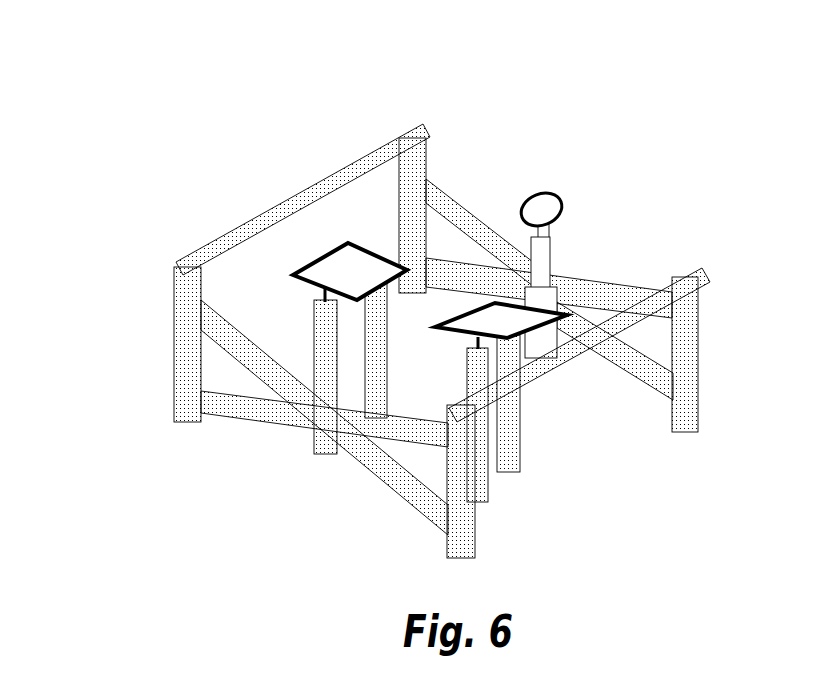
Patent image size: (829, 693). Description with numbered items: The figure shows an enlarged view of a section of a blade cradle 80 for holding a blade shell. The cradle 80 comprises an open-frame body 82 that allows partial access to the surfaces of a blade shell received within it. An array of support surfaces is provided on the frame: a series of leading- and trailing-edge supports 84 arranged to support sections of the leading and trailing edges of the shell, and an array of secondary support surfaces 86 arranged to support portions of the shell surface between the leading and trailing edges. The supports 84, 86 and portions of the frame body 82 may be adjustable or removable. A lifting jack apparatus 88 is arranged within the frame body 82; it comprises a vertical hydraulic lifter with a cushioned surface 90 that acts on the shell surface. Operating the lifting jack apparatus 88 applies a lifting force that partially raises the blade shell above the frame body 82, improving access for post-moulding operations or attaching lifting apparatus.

The blade cradle 80 is at (172, 186).
The open-frame body 82 is at (188, 370).
The leading- and trailing-edge supports 84 is at (330, 174).
The secondary support surfaces 86 is at (455, 333).
The lifting jack apparatus 88 is at (552, 262).
The cushioned surface 90 is at (547, 190).